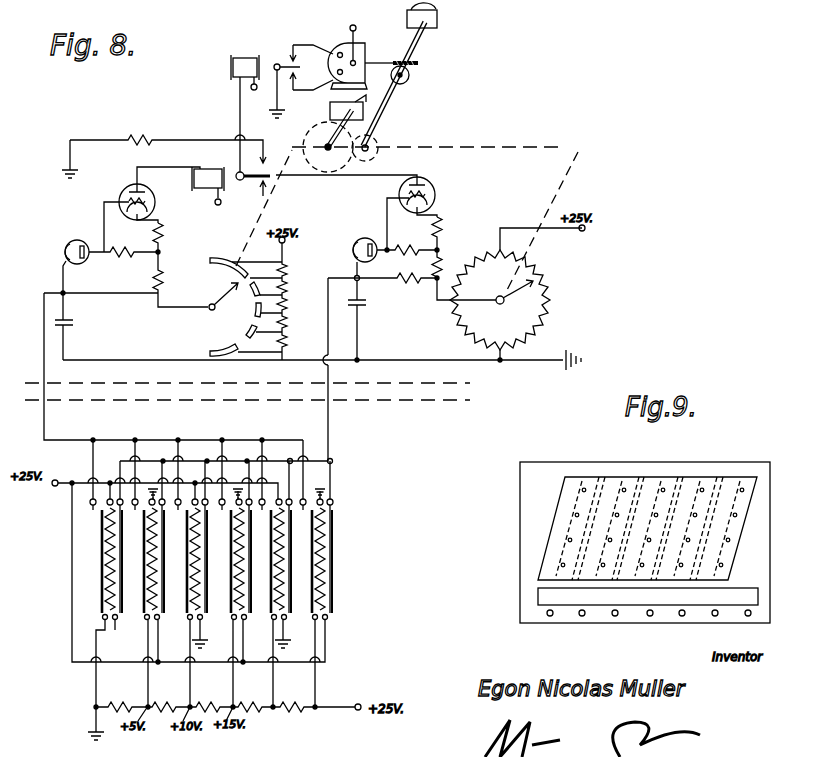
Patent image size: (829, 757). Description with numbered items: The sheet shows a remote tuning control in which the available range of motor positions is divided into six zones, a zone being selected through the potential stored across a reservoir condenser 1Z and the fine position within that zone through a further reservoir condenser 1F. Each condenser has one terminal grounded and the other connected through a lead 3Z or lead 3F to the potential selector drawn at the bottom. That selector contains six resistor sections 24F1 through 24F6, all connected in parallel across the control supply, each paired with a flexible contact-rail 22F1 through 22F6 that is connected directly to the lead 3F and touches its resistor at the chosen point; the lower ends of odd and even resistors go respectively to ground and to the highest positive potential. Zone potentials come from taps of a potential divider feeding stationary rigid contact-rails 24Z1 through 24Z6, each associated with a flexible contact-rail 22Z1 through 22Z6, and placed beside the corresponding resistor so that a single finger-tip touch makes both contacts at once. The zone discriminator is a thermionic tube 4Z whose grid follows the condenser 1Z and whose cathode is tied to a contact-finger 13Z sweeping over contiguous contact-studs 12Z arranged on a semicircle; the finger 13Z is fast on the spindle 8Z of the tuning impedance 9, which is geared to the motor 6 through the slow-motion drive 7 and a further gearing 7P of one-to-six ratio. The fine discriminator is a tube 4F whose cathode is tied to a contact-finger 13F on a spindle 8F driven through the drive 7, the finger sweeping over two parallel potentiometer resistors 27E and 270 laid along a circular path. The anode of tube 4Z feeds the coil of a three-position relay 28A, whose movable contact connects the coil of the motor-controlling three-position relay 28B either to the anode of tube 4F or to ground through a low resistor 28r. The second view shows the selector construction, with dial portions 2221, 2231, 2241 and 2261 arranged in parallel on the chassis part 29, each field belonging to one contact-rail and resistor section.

In FIG. 8, the three-position relay 28B is at (242, 62).
In FIG. 8, the resistor 28r is at (145, 137).
In FIG. 8, the energizing coil of three-position relay 28A is at (205, 186).
In FIG. 8, the thermionic tube 4Z is at (122, 193).
In FIG. 8, the thermionic tube 4F is at (435, 188).
In FIG. 8, the motor 6 is at (338, 50).
In FIG. 8, the slow-motion drive 7 is at (410, 72).
In FIG. 8, the tuning impedance 9 is at (437, 18).
In FIG. 8, the gearing 7P is at (365, 133).
In FIG. 8, the spindle 8Z is at (250, 250).
In FIG. 8, the spindle 8F is at (576, 156).
In FIG. 8, the contact-studs 12Z is at (231, 307).
In FIG. 8, the contact-finger 13Z is at (226, 306).
In FIG. 8, the reservoir condenser 1Z is at (74, 324).
In FIG. 8, the reservoir condenser 1F is at (363, 307).
In FIG. 8, the potentiometer resistor 27E is at (480, 268).
In FIG. 8, the contact-finger 13F is at (514, 304).
In FIG. 8, the potentiometer resistor 270 is at (548, 296).
In FIG. 8, the lead 3Z is at (46, 410).
In FIG. 8, the lead 3F is at (333, 410).
In FIG. 8, the resistor section 24F1 is at (108, 528).
In FIG. 8, the flexible contact-rail 22F1 is at (120, 552).
In FIG. 8, the stationary rigid contact-rail 24Z1 is at (102, 576).
In FIG. 8, the flexible contact-rail 22Z1 is at (97, 603).
In FIG. 8, the resistor section 24F6 is at (322, 520).
In FIG. 8, the flexible contact-rail 22F6 is at (334, 535).
In FIG. 8, the stationary rigid contact-rail 24Z6 is at (324, 562).
In FIG. 8, the flexible contact-rail 22Z6 is at (334, 590).
In FIG. 9, the chassis part 29 is at (590, 478).
In FIG. 9, the dial portion 2221 is at (576, 484).
In FIG. 9, the dial portion 2231 is at (636, 484).
In FIG. 9, the dial portion 2241 is at (675, 484).
In FIG. 9, the dial portion 2261 is at (738, 484).